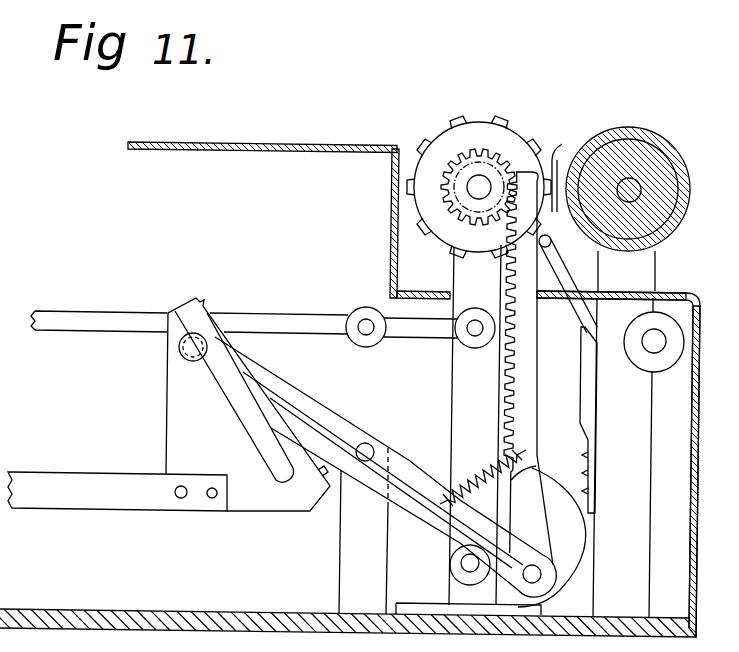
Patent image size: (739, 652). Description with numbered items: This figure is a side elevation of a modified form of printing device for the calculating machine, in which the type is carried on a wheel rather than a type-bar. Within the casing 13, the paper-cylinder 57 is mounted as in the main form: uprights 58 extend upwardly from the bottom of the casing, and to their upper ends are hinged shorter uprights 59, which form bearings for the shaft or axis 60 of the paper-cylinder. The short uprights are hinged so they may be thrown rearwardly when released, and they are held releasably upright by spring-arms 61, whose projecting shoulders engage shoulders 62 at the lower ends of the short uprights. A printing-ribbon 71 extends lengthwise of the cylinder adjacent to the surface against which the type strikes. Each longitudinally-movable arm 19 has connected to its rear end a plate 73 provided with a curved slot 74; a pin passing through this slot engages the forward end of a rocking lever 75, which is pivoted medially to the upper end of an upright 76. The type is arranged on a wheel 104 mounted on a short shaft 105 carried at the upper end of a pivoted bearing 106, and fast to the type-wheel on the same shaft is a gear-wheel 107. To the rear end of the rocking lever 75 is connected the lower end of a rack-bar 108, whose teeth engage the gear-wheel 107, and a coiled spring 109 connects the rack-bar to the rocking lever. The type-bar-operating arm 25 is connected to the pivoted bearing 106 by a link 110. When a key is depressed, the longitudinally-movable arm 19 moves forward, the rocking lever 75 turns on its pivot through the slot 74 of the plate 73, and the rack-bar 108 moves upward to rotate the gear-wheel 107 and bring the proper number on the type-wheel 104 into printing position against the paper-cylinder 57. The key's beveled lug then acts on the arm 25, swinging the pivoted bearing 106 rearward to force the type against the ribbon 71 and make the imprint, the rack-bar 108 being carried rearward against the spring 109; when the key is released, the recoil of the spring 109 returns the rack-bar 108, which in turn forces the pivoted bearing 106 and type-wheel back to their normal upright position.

The casing 13 is at (268, 143).
The longitudinally-movable arm 19 is at (125, 503).
The type-bar-operating arm 25 is at (189, 308).
The paper-cylinder 57 is at (638, 127).
The upright 58 is at (647, 510).
The shorter upright 59 is at (647, 267).
The shaft or axis 60 is at (630, 190).
The spring-arm 61 is at (580, 395).
The shoulder 62 is at (600, 343).
The printing-ribbon 71 is at (566, 165).
The plate 73 is at (265, 500).
The curved slot 74 is at (227, 407).
The rocking lever 75 is at (337, 414).
The upright 76 is at (345, 562).
The type-wheel 104 is at (513, 142).
The short shaft 105 is at (479, 180).
The pivoted bearing 106 is at (457, 398).
The gear-wheel 107 is at (452, 162).
The rack-bar 108 is at (533, 493).
The coiled spring 109 is at (537, 465).
The link 110 is at (424, 330).